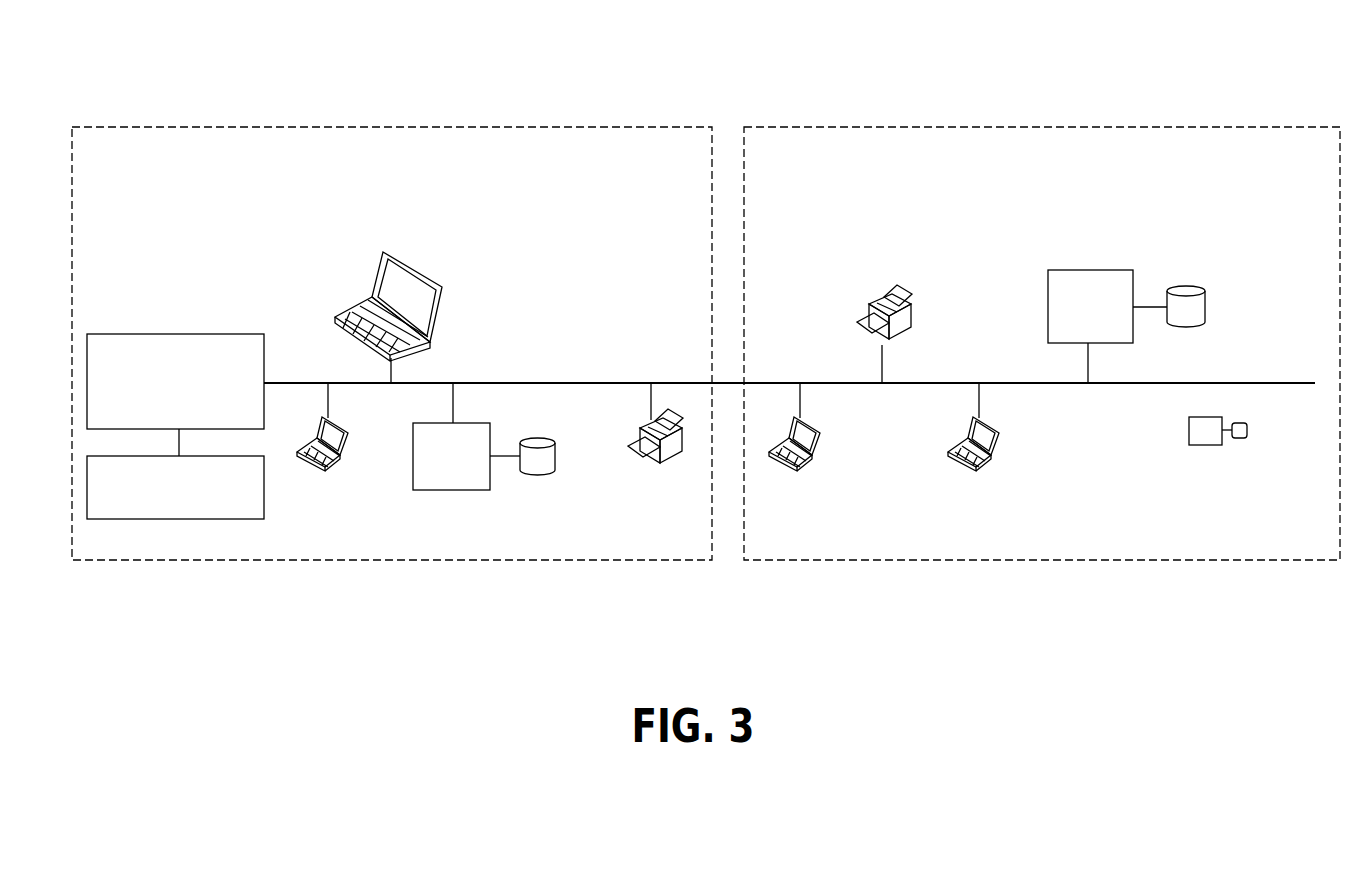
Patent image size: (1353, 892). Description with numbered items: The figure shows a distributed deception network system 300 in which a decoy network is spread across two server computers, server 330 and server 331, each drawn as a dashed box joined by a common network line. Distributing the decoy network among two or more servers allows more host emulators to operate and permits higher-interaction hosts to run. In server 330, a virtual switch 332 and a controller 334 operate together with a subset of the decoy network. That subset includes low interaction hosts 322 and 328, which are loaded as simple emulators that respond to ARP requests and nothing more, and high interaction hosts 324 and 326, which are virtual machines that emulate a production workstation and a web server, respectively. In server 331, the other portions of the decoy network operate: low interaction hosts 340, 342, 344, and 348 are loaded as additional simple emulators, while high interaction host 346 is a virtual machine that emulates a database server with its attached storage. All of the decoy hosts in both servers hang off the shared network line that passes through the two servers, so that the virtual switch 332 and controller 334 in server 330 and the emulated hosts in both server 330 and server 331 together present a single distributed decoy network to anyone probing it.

The distributed deception network system 300 is at (188, 58).
The server 330 is at (378, 186).
The server 331 is at (1013, 186).
The virtual switch 332 is at (160, 401).
The controller 334 is at (162, 511).
The low interaction host 322 is at (327, 477).
The high interaction host 324 is at (438, 318).
The high interaction host 326 is at (463, 490).
The low interaction host 328 is at (647, 465).
The low interaction host 340 is at (805, 468).
The low interaction host 342 is at (882, 292).
The low interaction host 344 is at (987, 468).
The high interaction host 346 is at (1088, 270).
The low interaction host 348 is at (1208, 445).